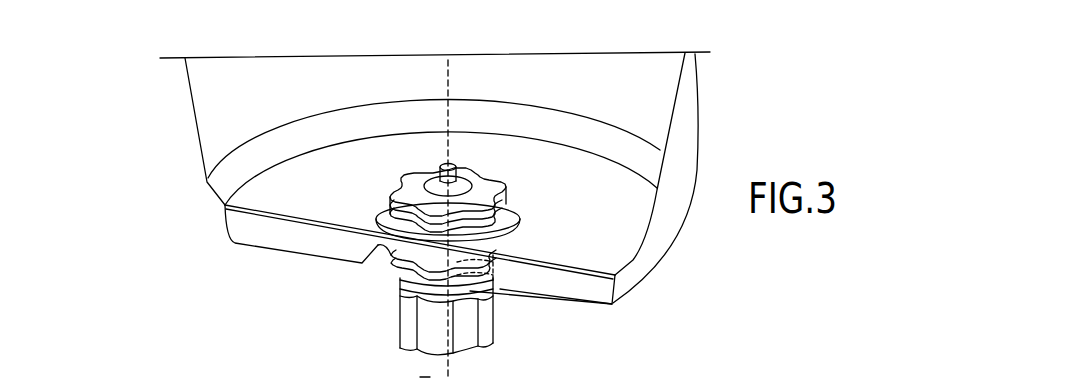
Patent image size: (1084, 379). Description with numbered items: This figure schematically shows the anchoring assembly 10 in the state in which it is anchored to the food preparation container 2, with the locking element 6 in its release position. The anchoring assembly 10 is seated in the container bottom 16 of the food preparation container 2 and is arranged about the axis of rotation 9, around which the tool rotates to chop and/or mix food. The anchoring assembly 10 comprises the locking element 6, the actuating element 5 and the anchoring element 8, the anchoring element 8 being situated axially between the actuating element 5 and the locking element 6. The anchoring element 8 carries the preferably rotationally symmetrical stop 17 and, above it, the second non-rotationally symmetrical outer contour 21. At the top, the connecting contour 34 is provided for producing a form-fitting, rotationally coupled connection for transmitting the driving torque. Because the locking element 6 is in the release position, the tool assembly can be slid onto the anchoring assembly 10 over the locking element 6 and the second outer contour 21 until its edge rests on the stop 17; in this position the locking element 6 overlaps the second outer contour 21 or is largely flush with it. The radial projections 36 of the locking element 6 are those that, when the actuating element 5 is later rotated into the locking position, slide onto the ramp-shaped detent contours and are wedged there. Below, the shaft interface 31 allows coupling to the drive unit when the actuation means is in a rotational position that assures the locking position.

The food preparation container 2 is at (665, 298).
The actuating element 5 is at (397, 267).
The locking element 6 is at (487, 177).
The anchoring element 8 is at (522, 187).
The axis of rotation 9 is at (443, 73).
The anchoring assembly 10 is at (587, 330).
The container bottom 16 is at (292, 203).
The stop 17 is at (500, 220).
The second non-rotationally symmetrical outer contour 21 is at (507, 203).
The shaft interface 31 is at (400, 327).
The connecting contour 34 is at (455, 172).
The radial projections 36 is at (413, 173).